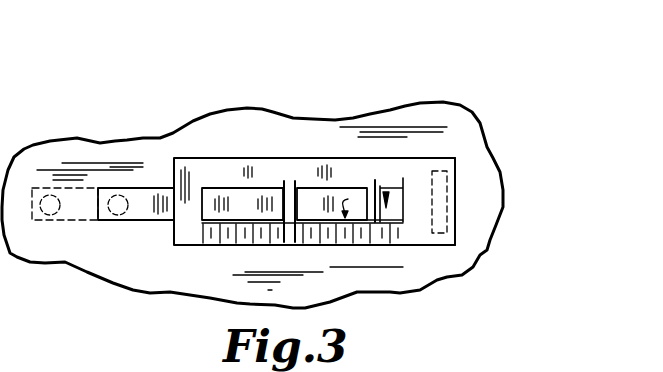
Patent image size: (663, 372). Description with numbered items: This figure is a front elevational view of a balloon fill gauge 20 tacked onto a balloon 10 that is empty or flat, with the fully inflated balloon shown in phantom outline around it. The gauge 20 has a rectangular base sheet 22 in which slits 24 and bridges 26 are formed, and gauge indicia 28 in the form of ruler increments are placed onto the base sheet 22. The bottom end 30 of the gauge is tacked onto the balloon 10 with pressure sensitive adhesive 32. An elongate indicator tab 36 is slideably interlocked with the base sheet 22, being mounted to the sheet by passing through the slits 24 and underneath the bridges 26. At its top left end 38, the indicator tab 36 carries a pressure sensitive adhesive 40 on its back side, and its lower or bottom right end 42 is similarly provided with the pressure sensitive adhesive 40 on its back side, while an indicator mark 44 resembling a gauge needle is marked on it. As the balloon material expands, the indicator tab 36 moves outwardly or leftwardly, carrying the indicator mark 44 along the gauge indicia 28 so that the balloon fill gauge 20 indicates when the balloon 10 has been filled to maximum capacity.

The balloon 10 is at (317, 133).
The balloon fill gauge 20 is at (276, 148).
The base sheet 22 is at (367, 178).
The slits 24 is at (205, 202).
The bridges 26 is at (296, 226).
The gauge indicia 28 is at (258, 226).
The bottom end 30 is at (462, 178).
The pressure sensitive adhesive 32 is at (453, 258).
The indicator tab 36 is at (152, 197).
The top left end 38 is at (107, 188).
The pressure sensitive adhesive (PSA) 40 is at (123, 190).
The bottom right end 42 is at (399, 183).
The indicator mark 44 is at (388, 190).